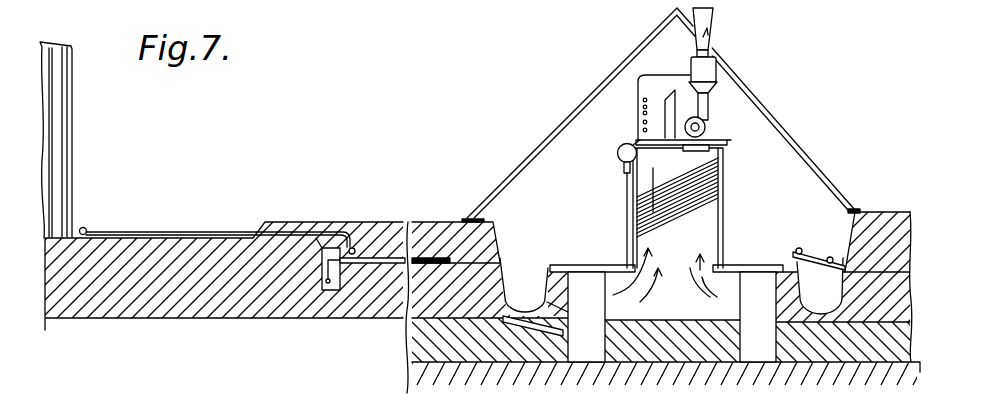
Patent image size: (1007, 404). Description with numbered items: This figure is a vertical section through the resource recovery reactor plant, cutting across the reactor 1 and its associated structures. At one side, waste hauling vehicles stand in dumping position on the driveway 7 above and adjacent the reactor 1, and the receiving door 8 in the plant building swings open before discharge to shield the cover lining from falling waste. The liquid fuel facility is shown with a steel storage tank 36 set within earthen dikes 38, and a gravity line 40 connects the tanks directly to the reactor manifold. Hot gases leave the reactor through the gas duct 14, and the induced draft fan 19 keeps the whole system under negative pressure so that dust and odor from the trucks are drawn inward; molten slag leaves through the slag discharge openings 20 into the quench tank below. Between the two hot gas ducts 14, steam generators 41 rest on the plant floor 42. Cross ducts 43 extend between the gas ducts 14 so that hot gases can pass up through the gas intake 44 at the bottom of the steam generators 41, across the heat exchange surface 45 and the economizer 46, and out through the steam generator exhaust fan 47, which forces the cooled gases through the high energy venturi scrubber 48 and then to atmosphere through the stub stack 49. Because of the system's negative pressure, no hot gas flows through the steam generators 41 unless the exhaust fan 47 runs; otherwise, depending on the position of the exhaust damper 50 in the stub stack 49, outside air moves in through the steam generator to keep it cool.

The reactor 1 is at (489, 284).
The driveway 7 is at (887, 211).
The receiving door 8 is at (648, 189).
The gas duct 14 is at (599, 311).
The induced draft fan 19 is at (567, 115).
The slag discharge openings 20 is at (528, 334).
The steel storage tank 36 is at (73, 125).
The earthen dikes 38 is at (258, 229).
The gravity line 40 is at (438, 259).
The steam generators 41 is at (724, 190).
The plant floor 42 is at (610, 267).
The cross ducts 43 is at (695, 313).
The gas intake 44 is at (694, 258).
The heat exchange surface 45 is at (635, 207).
The economizer 46 is at (636, 114).
The steam generator exhaust fan 47 is at (706, 118).
The high energy venturi scrubber 48 is at (716, 68).
The stub stack 49 is at (713, 13).
The exhaust damper 50 is at (708, 34).